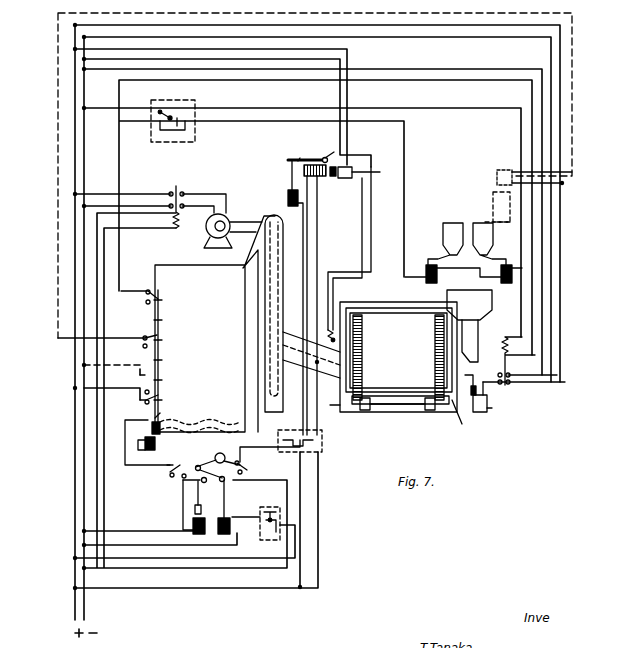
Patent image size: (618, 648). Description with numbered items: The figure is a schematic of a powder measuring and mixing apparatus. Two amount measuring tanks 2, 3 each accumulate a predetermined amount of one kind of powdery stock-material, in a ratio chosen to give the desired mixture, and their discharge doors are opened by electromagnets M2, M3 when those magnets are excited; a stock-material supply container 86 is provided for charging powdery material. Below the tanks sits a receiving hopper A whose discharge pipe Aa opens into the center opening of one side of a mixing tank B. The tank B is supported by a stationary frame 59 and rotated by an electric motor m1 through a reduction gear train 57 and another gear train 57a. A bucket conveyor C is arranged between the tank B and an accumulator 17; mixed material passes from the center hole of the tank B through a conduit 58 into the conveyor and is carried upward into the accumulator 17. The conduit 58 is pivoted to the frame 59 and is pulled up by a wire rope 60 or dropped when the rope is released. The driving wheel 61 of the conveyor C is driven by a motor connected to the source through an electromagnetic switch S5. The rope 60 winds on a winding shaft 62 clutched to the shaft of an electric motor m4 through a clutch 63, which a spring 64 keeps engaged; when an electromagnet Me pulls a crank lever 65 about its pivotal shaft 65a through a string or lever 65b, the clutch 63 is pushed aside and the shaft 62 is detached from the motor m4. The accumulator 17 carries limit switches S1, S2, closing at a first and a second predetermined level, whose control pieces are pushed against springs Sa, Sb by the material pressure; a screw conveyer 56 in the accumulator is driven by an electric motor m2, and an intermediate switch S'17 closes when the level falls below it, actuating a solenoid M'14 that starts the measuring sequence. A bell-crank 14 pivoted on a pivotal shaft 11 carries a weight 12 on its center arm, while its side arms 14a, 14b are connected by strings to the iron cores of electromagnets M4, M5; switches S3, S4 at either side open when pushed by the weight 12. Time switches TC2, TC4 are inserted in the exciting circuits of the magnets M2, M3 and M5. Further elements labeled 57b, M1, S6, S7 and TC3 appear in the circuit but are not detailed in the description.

The amount measuring tank 2 is at (445, 234).
The amount measuring tank 3 is at (489, 234).
The pivotal shaft 11 is at (210, 490).
The weight 12 is at (224, 454).
The bell-crank 14 is at (201, 462).
The side arm 14a is at (190, 481).
The side arm 14b is at (226, 482).
The accumulator 17 is at (178, 265).
The intermediate switch S'17 is at (182, 362).
The screw conveyer 56 is at (219, 420).
The reduction gear train 57 is at (474, 382).
The gear train 57a is at (466, 420).
The belt 57b is at (435, 371).
The conduit 58 is at (334, 374).
The stationary frame 59 is at (329, 406).
The wire rope 60 is at (329, 246).
The driving wheel 61 is at (272, 218).
The winding shaft 62 is at (300, 158).
The clutch 63 is at (330, 178).
The spring 64 is at (336, 181).
The crank lever 65 is at (312, 165).
The pivotal shaft 65a is at (334, 152).
The string or lever 65b is at (288, 162).
The stock-material supply container 86 is at (493, 196).
The receiving hopper A is at (469, 305).
The discharge pipe Aa is at (478, 336).
The mixing tank B is at (398, 357).
The bucket conveyor C is at (282, 298).
The solenoid M1 is at (508, 263).
The electromagnet M2 is at (428, 265).
The electromagnet M3 is at (226, 222).
The electromagnet M4 is at (192, 532).
The electromagnet M5 is at (233, 536).
The electromagnet Me is at (288, 191).
The electric motor m1 is at (490, 403).
The electric motor m2 is at (143, 436).
The electric motor m4 is at (376, 173).
The magnet or solenoid M'14 is at (528, 166).
The limit switch S1 is at (146, 289).
The limit switch S2 is at (148, 386).
The switch S3 is at (177, 466).
The switch S4 is at (246, 462).
The electromagnetic switch S5 is at (182, 194).
The switch S6 is at (512, 386).
The switch S7 is at (328, 332).
The spring Sa is at (164, 340).
The spring Sb is at (168, 416).
The time switch TC2 is at (196, 139).
The time control TC3 is at (328, 440).
The time switch TC4 is at (280, 510).